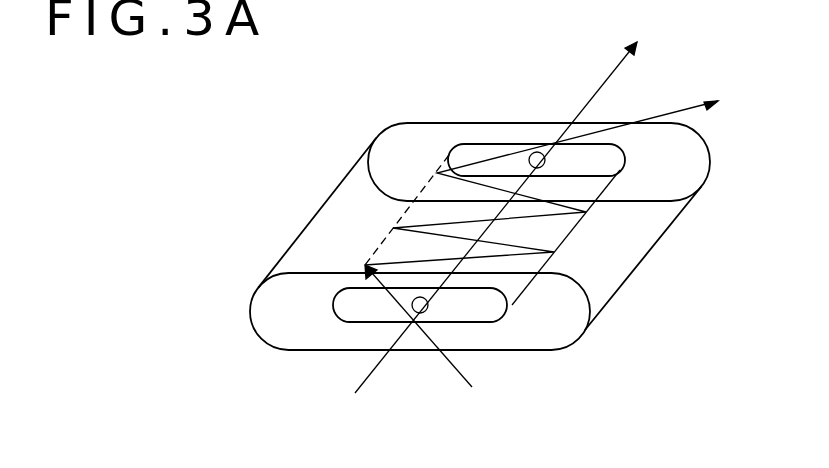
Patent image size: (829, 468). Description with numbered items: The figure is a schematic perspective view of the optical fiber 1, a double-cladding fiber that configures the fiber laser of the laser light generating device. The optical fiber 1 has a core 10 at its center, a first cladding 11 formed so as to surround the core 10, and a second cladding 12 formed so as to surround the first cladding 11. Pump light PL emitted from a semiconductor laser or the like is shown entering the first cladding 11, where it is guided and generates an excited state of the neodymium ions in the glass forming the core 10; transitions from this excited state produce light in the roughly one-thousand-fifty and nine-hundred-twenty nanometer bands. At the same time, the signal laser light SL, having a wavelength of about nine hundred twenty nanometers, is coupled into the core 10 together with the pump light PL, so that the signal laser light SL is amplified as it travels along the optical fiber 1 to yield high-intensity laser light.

The optical fiber 1 is at (383, 76).
The core 10 is at (428, 308).
The first cladding 11 is at (491, 308).
The second cladding 12 is at (573, 317).
The pump light PL is at (445, 356).
The signal laser light SL is at (362, 382).